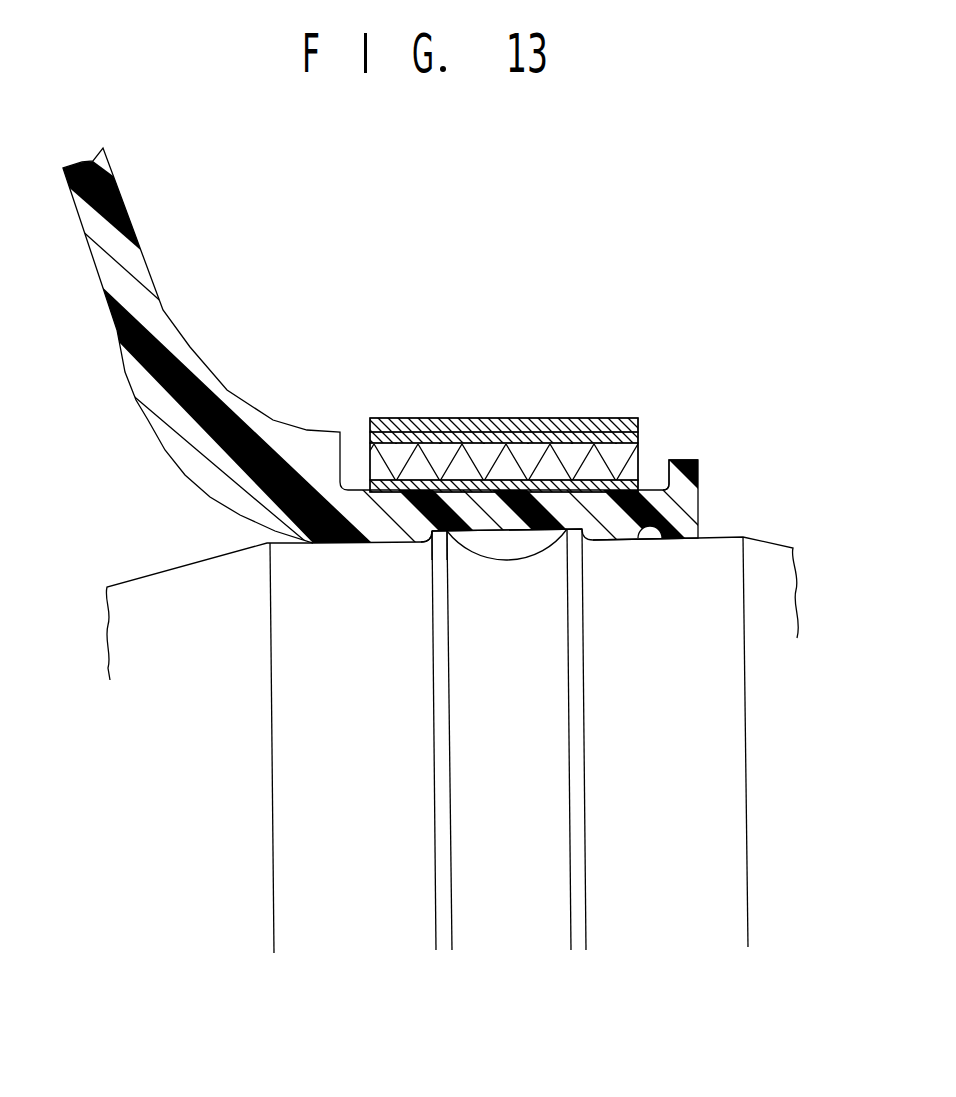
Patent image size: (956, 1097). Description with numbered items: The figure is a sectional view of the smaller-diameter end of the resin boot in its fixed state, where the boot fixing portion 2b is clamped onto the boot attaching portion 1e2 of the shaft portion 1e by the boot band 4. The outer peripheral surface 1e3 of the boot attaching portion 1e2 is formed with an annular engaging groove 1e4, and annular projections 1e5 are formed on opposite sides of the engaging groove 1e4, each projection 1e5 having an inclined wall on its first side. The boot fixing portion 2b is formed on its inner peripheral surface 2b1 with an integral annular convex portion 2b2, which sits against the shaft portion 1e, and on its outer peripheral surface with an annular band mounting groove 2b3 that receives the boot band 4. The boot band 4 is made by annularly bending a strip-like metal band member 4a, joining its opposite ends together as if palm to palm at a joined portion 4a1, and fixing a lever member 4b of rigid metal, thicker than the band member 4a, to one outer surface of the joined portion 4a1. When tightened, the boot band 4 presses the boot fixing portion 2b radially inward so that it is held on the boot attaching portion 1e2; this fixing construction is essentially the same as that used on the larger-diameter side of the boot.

The shaft portion 1e is at (173, 589).
The boot attaching portion 1e2 is at (415, 582).
The outer peripheral surface 1e3 is at (656, 541).
The engaging groove 1e4 is at (520, 561).
The projection 1e5 is at (438, 645).
The boot fixing portion 2b is at (710, 493).
The inner peripheral surface 2b1 is at (623, 539).
The convex portion 2b2 is at (487, 529).
The band mounting groove 2b3 is at (657, 483).
The boot band 4 is at (386, 406).
The band member 4a is at (580, 440).
The joined portion 4a1 is at (422, 424).
The lever member 4b is at (488, 452).